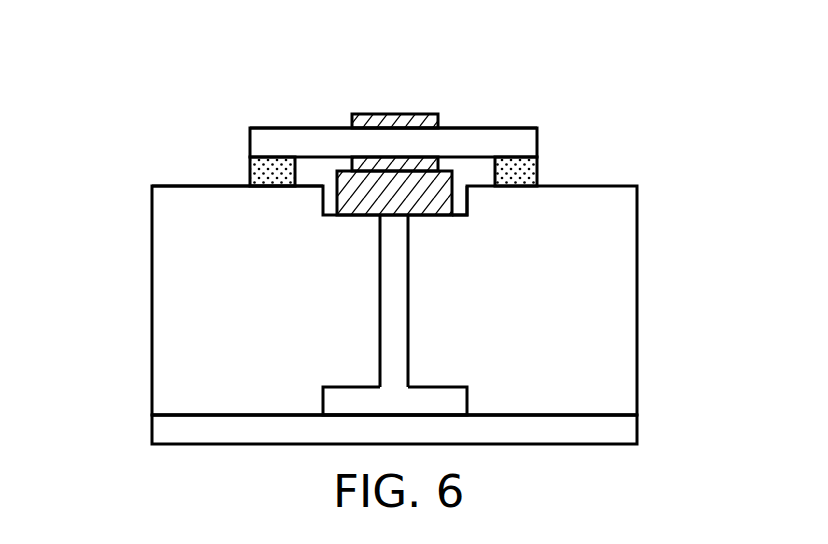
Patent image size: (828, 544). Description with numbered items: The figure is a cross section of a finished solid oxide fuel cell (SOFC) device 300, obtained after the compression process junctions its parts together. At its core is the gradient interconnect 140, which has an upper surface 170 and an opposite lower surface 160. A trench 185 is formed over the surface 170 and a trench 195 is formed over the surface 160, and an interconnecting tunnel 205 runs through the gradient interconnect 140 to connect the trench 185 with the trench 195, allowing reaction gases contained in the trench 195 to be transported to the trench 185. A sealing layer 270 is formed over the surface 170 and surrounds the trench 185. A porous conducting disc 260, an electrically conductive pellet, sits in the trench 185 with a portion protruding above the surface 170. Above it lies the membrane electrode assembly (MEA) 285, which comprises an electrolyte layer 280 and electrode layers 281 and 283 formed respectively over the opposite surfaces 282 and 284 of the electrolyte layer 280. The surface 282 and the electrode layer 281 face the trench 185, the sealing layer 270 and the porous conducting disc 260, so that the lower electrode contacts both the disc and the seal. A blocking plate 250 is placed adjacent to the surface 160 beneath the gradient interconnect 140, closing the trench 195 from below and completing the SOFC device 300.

The solid oxide fuel cell (SOFC) device 300 is at (160, 42).
The gradient interconnect 140 is at (149, 300).
The surface 160 is at (177, 418).
The surface 170 is at (177, 184).
The trench 185 is at (469, 202).
The trench 195 is at (469, 402).
The interconnecting tunnel 205 is at (412, 299).
The blocking plate 250 is at (617, 429).
The porous conducting disc 260 is at (358, 207).
The sealing layer 270 is at (522, 170).
The electrolyte layer 280 is at (422, 143).
The electrode layer 281 is at (426, 164).
The surface 282 is at (311, 162).
The electrode layer 283 is at (425, 122).
The surface 284 is at (276, 126).
The membrane electrode assembly (MEA) 285 is at (394, 107).